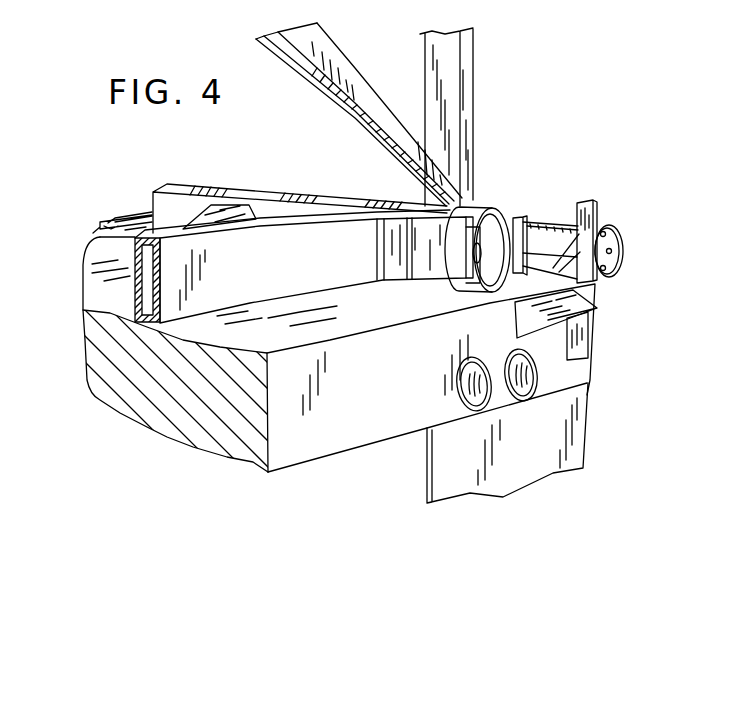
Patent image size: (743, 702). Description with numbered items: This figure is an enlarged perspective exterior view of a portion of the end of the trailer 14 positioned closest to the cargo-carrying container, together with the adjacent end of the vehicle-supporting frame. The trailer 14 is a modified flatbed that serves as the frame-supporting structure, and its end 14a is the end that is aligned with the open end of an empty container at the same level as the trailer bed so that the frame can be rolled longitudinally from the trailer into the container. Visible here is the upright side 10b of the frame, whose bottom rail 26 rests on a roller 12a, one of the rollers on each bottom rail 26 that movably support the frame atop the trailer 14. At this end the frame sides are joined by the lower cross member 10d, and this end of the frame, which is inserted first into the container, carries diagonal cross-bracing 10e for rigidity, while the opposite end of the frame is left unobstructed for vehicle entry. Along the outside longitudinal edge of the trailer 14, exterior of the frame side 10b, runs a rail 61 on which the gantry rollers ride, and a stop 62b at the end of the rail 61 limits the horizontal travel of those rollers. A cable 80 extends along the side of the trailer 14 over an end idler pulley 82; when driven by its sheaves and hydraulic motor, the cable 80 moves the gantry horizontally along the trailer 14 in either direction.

The upright side 10b is at (470, 72).
The diagonal cross-bracing 10e is at (298, 67).
The lower cross member 10d is at (297, 283).
The bottom rail 26 is at (304, 200).
The roller 12a is at (488, 208).
The cable 80 is at (532, 216).
The rail 61 is at (552, 245).
The stop 62b is at (596, 206).
The end idler pulley 82 is at (628, 243).
The trailer 14 is at (608, 357).
The end of the trailer 14a is at (351, 435).